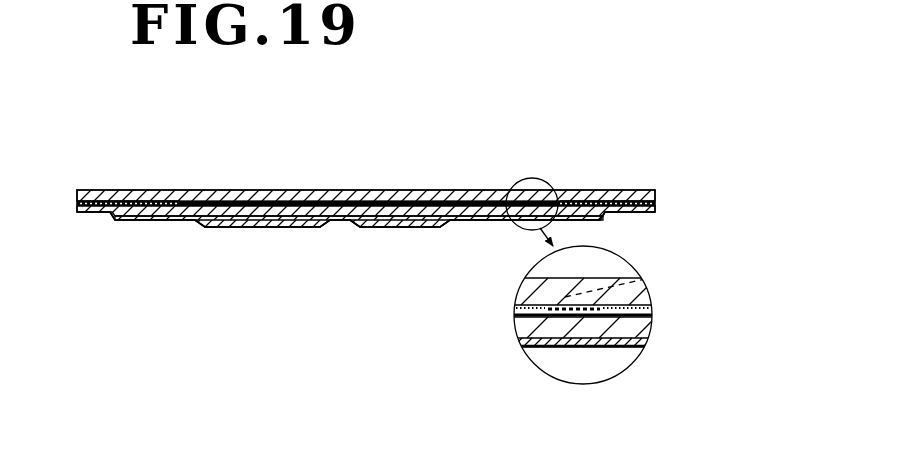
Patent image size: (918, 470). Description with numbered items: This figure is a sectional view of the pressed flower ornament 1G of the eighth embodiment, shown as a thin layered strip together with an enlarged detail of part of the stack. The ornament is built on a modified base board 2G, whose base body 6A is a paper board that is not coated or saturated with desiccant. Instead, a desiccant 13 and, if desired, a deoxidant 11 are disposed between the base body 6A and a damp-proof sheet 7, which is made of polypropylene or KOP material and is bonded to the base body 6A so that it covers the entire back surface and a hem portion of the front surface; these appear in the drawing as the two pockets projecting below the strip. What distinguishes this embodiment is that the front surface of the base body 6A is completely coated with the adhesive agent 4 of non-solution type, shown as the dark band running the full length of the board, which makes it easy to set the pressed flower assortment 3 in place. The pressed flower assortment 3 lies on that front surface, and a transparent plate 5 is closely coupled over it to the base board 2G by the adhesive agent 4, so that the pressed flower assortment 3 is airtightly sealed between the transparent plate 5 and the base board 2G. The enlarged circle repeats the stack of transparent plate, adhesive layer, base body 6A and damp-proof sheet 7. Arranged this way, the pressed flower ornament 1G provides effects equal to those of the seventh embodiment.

The pressed flower ornament 1G is at (649, 133).
The base board 2G is at (191, 221).
The pressed flower assortment 3 is at (210, 200).
The adhesive agent 4 is at (127, 200).
The transparent plate 5 is at (447, 200).
The base body 6A is at (342, 222).
The damp-proof sheet 7 is at (432, 222).
The deoxidant 11 is at (277, 229).
The desiccant 13 is at (386, 229).